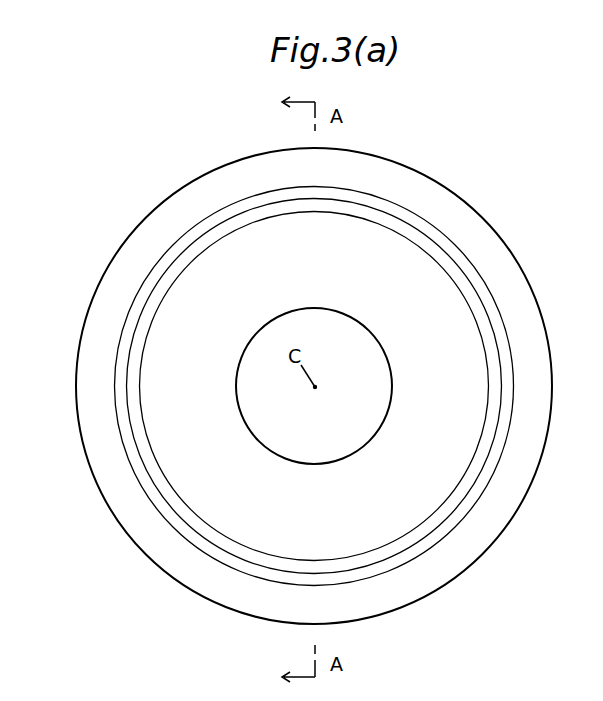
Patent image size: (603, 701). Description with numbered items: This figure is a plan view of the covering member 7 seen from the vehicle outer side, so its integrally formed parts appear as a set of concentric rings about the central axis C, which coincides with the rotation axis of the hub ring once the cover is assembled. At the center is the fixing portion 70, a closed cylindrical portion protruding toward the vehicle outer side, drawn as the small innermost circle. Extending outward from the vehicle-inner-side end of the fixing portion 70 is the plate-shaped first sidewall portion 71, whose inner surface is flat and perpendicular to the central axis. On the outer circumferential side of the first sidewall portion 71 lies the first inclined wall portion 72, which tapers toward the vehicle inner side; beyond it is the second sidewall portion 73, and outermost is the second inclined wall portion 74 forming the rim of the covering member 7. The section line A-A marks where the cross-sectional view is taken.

The covering member 7 is at (139, 161).
The fixing portion 70 is at (359, 339).
The first sidewall portion 71 is at (455, 330).
The first inclined wall portion 72 is at (462, 283).
The second sidewall portion 73 is at (453, 253).
The second inclined wall portion 74 is at (448, 200).